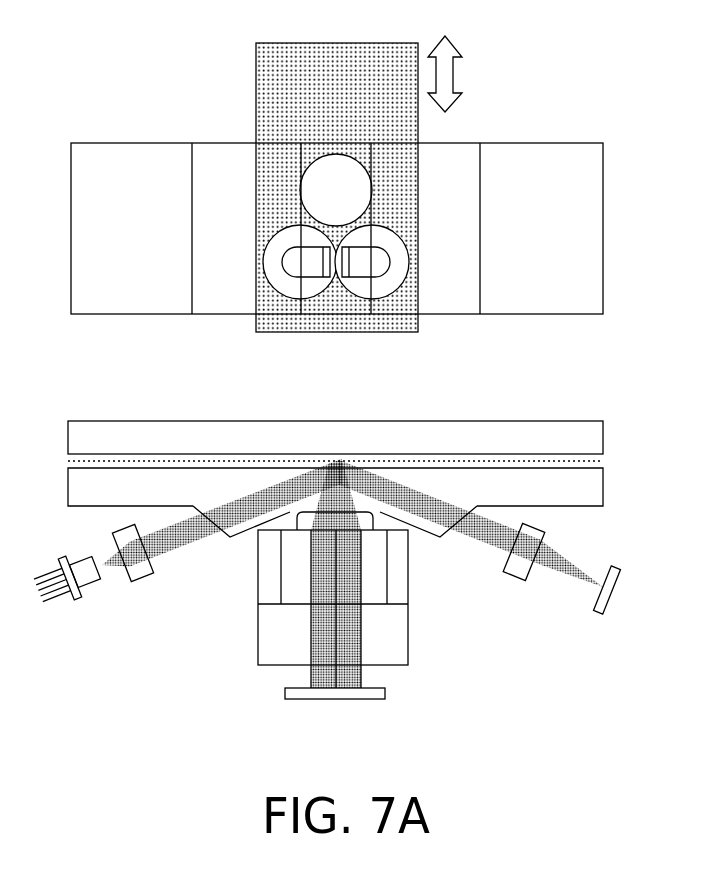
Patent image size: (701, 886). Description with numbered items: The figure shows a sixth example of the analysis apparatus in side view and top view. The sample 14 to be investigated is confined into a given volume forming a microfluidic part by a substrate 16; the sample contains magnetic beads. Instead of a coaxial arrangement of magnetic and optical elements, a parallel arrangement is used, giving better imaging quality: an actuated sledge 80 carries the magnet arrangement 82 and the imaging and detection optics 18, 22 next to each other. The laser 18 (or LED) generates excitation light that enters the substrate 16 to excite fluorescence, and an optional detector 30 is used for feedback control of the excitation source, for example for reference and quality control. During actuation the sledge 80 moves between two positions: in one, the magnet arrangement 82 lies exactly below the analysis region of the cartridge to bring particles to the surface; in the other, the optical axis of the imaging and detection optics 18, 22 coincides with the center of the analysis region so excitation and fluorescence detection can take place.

The sample 14 is at (603, 438).
The substrate 16 is at (603, 490).
The laser 18 is at (80, 605).
The imaging and detection optics 22 is at (397, 275).
The detector 30 is at (597, 614).
The actuated sledge 80 is at (256, 88).
The magnet arrangement 82 is at (365, 192).